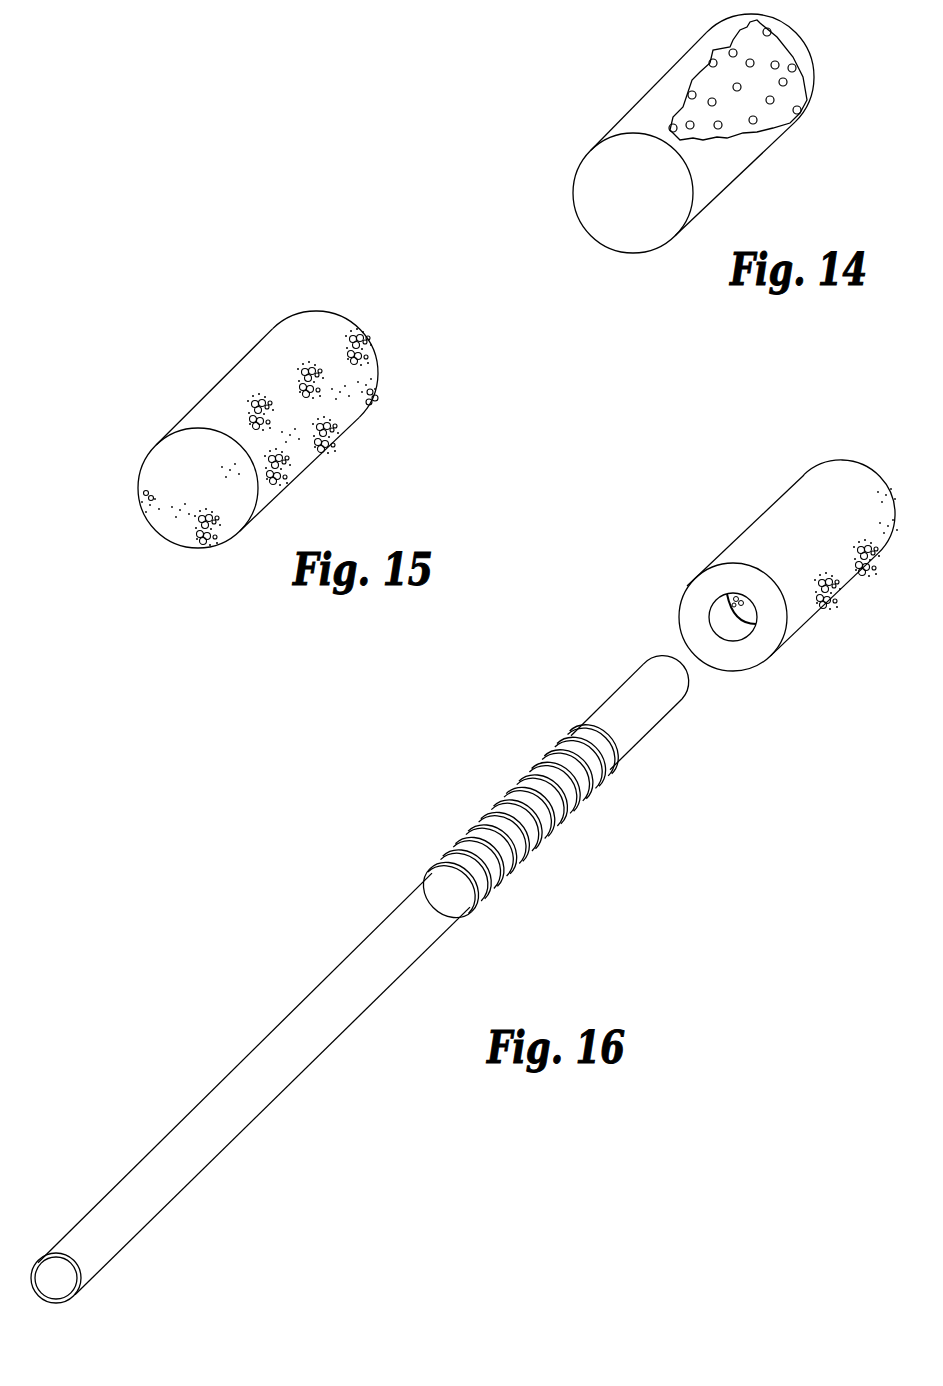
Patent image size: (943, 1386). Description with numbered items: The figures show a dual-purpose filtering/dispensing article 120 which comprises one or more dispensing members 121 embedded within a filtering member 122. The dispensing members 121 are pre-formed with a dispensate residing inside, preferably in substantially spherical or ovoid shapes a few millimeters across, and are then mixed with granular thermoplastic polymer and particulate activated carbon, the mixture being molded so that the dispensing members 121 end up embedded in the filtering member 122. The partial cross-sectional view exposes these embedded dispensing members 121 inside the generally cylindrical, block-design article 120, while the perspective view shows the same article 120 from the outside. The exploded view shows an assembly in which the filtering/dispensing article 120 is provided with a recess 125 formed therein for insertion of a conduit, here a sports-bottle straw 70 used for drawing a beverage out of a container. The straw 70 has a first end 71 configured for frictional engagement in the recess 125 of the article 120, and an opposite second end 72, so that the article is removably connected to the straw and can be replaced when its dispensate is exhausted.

In FIG. 14, the filtering/dispensing article 120 is at (624, 65).
In FIG. 15, the filtering/dispensing article 120 is at (196, 366).
In FIG. 14, the dispensing members 121 is at (752, 58).
In FIG. 14, the filtering member 122 is at (772, 106).
In FIG. 16, the recess 125 is at (725, 622).
In FIG. 16, the sports-bottle straw 70 is at (305, 997).
In FIG. 16, the first end 71 is at (687, 676).
In FIG. 16, the second end 72 is at (60, 1254).